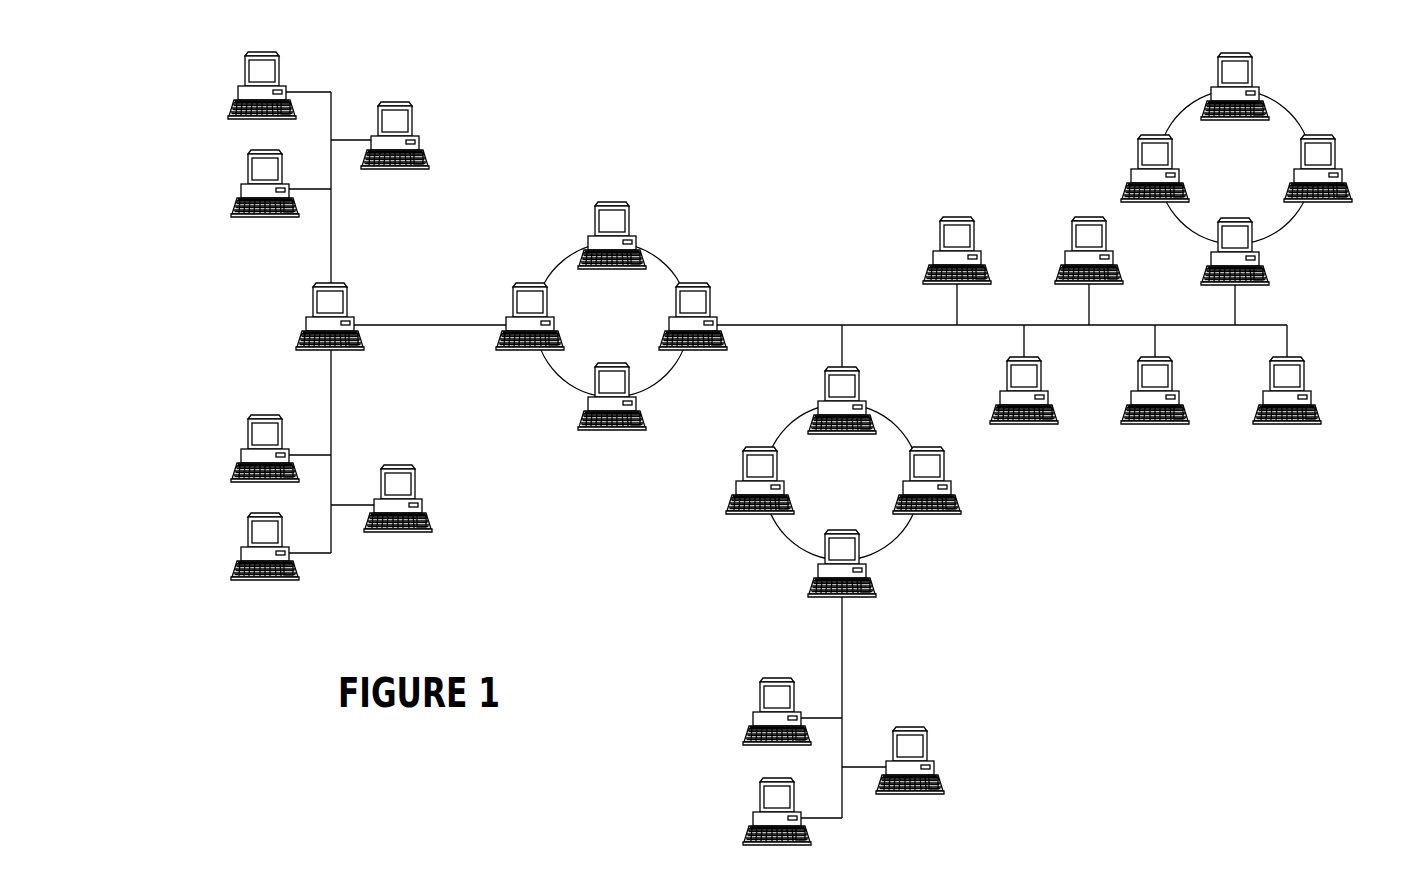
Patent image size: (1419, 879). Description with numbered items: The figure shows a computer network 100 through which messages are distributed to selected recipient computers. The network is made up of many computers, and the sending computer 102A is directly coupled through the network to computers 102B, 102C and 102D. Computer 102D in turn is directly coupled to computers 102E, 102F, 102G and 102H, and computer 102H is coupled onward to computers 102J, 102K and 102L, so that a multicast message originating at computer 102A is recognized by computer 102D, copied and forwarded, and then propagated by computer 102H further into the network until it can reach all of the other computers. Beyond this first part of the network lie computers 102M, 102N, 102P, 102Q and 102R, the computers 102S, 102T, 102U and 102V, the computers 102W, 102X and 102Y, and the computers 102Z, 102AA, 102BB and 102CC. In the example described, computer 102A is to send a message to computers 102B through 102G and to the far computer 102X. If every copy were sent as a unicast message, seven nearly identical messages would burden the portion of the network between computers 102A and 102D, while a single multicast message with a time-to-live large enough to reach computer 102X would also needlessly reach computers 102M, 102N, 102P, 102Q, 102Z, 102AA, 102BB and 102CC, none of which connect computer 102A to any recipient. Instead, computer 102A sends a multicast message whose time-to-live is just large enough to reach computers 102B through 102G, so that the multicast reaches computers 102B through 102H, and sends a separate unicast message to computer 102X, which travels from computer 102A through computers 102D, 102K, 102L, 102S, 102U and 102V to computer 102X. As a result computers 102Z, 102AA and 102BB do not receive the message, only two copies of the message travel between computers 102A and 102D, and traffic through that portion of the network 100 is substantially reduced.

The computer network 100 is at (733, 158).
The computer 102A is at (280, 72).
The computer 102B is at (421, 141).
The computer 102C is at (241, 190).
The computer 102D is at (313, 312).
The computer 102E is at (241, 455).
The computer 102F is at (421, 505).
The computer 102G is at (241, 553).
The computer 102H is at (506, 300).
The computer 102J is at (594, 222).
The computer 102K is at (590, 432).
The computer 102L is at (716, 300).
The computer 102M is at (1290, 424).
The computer 102N is at (933, 258).
The computer 102P is at (1027, 424).
The computer 102Q is at (1065, 258).
The computer 102R is at (1158, 424).
The computer 102S is at (818, 405).
The computer 102T is at (736, 487).
The computer 102U is at (955, 510).
The computer 102V is at (868, 597).
The computer 102W is at (753, 718).
The computer 102X is at (934, 767).
The computer 102Y is at (761, 818).
The computer 102Z is at (1131, 175).
The computer 102AA is at (1218, 68).
The computer 102BB is at (1318, 135).
The computer 102CC is at (1262, 258).